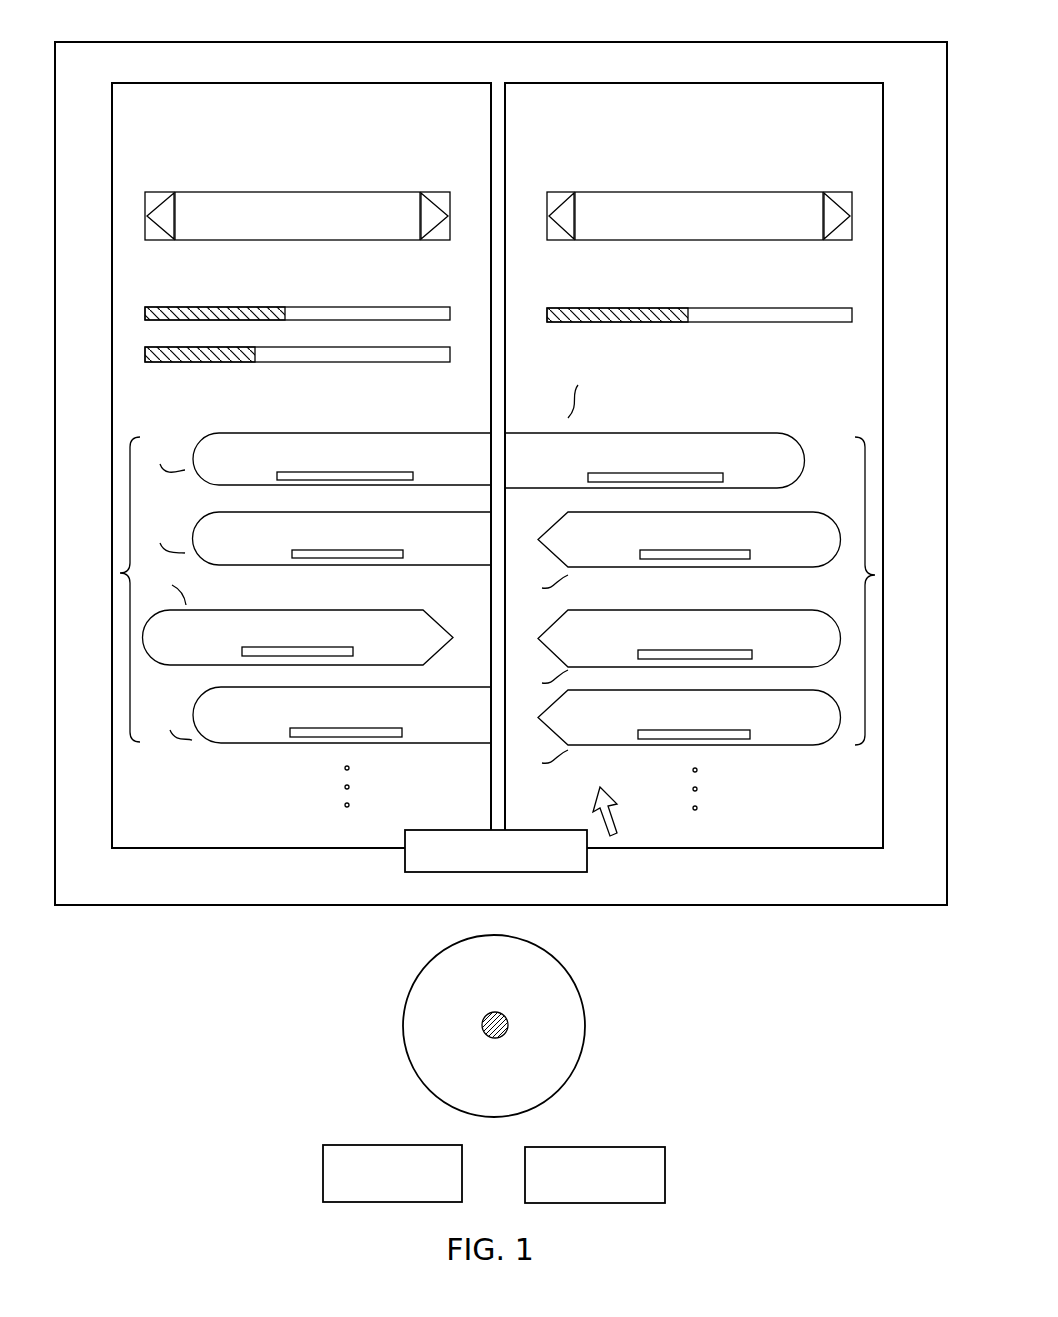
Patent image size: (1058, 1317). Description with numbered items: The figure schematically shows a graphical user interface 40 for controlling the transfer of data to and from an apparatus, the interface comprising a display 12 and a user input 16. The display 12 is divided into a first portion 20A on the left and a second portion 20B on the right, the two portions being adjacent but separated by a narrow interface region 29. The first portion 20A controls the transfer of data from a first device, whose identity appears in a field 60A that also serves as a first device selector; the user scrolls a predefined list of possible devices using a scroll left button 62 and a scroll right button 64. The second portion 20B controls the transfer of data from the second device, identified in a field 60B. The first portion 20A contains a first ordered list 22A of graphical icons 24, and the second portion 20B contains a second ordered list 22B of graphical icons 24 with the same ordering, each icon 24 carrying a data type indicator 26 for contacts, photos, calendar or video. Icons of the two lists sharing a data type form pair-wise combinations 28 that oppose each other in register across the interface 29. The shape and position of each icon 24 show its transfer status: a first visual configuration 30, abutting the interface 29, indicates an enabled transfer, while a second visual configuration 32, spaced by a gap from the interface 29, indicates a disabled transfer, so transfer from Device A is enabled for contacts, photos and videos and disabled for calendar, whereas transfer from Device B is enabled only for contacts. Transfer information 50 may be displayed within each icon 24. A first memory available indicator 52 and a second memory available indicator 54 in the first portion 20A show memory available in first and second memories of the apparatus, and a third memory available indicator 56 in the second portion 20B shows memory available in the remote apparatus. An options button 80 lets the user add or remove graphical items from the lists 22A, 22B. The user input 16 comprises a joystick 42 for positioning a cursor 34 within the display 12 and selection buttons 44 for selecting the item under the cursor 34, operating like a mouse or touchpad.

The display 12 is at (845, 906).
The user input 16 is at (752, 1040).
The first portion 20A is at (262, 84).
The second portion 20B is at (688, 85).
The first ordered list 22A is at (120, 573).
The second ordered list 22B is at (878, 575).
The graphical icon 24 is at (245, 433).
The data type indicator 26 is at (345, 441).
The pair-wise combination 28 is at (484, 433).
The interface region 29 is at (505, 73).
The first visual configuration 30 is at (185, 470).
The second visual configuration 32 is at (186, 605).
The cursor 34 is at (622, 818).
The graphical user interface 40 is at (160, 1063).
The joystick 42 is at (510, 1022).
The selection buttons 44 is at (355, 1145).
The transfer information 50 is at (415, 478).
The first memory available indicator 52 is at (160, 307).
The second memory available indicator 54 is at (150, 362).
The third memory available indicator 56 is at (560, 308).
The field 60A is at (222, 190).
The field 60B is at (625, 190).
The scroll left button 62 is at (160, 190).
The scroll right button 64 is at (437, 190).
The options button 80 is at (405, 860).